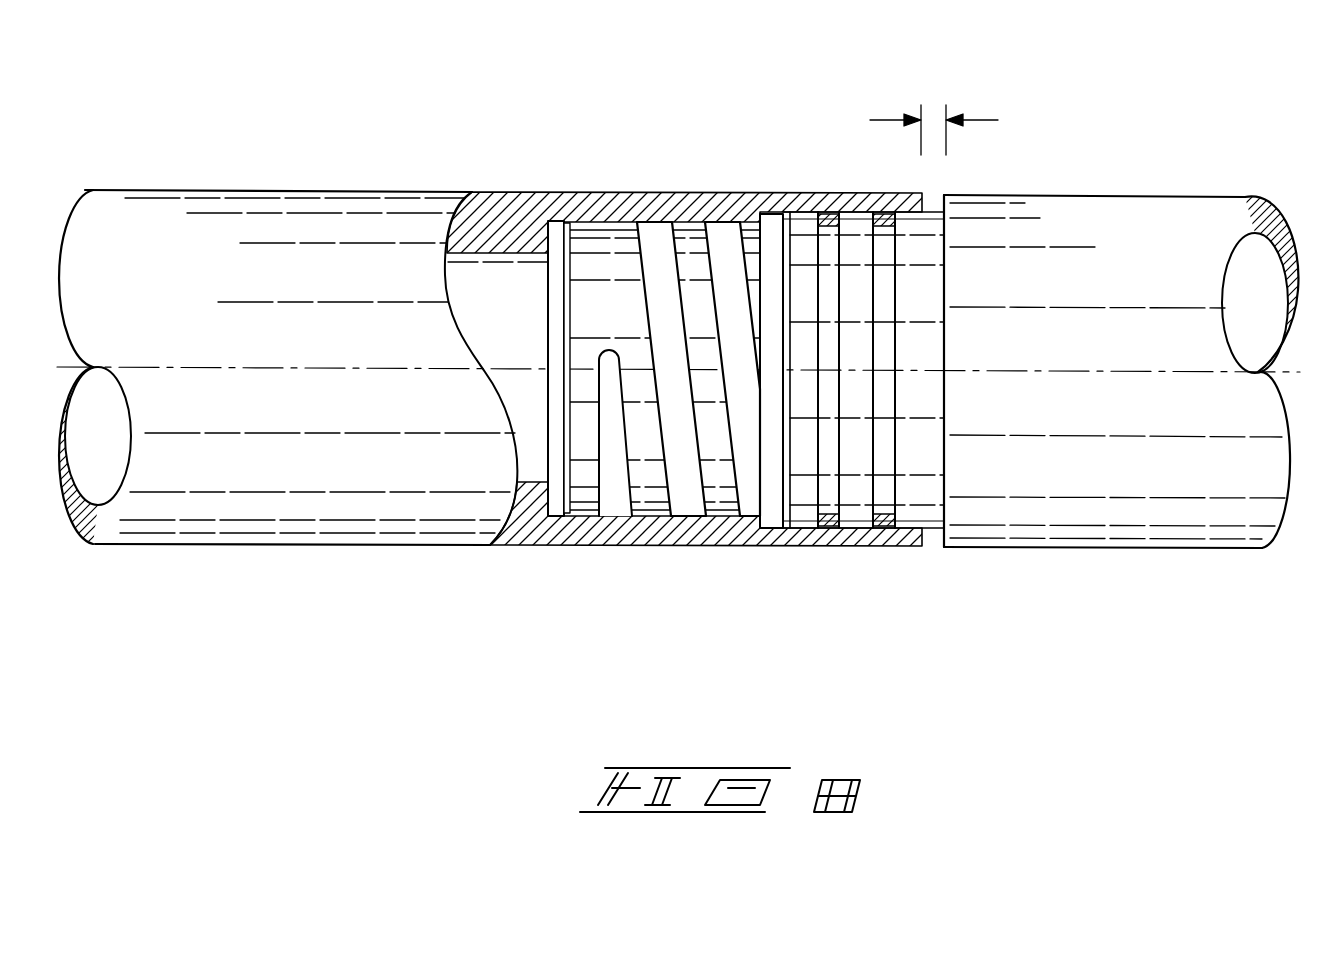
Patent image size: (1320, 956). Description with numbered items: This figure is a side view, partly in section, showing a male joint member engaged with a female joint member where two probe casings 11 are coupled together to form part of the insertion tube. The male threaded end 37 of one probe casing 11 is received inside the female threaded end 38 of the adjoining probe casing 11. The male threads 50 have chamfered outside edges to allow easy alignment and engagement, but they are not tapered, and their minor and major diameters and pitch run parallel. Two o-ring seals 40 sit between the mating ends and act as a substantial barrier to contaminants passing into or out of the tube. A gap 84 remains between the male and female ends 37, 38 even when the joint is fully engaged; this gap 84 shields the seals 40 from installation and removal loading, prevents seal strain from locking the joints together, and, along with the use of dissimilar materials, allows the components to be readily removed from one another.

The probe casing 11 is at (1152, 146).
The male threaded end 37 is at (627, 328).
The female threaded end 38 is at (610, 547).
The o-ring seal 40 is at (866, 530).
The male thread 50 is at (650, 192).
The gap 84 is at (934, 104).